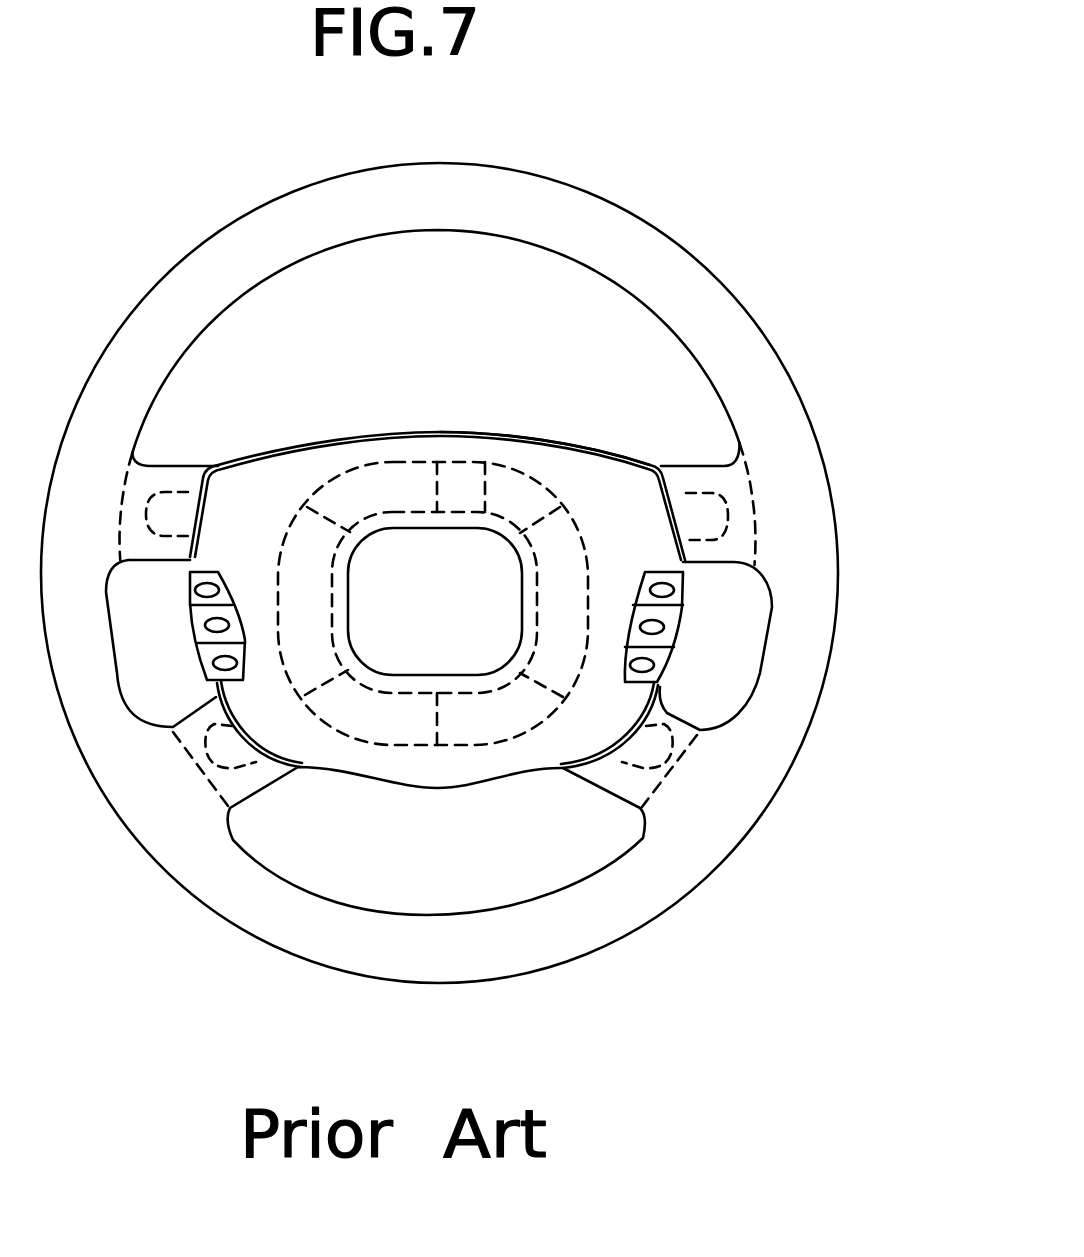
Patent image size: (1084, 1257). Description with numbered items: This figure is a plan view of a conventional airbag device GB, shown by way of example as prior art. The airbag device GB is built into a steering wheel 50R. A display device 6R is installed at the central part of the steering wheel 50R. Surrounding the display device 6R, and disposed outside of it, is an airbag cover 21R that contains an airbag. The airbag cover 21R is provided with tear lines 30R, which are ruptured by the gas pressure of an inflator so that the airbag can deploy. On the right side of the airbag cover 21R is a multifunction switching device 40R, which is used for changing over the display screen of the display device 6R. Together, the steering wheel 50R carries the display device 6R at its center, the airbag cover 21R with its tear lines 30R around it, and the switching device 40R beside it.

The steering wheel 50R is at (767, 380).
The multifunction switching device 40R is at (674, 600).
The airbag cover 21R is at (282, 468).
The tear lines 30R is at (467, 462).
The airbag device GB is at (577, 440).
The display device 6R is at (460, 660).